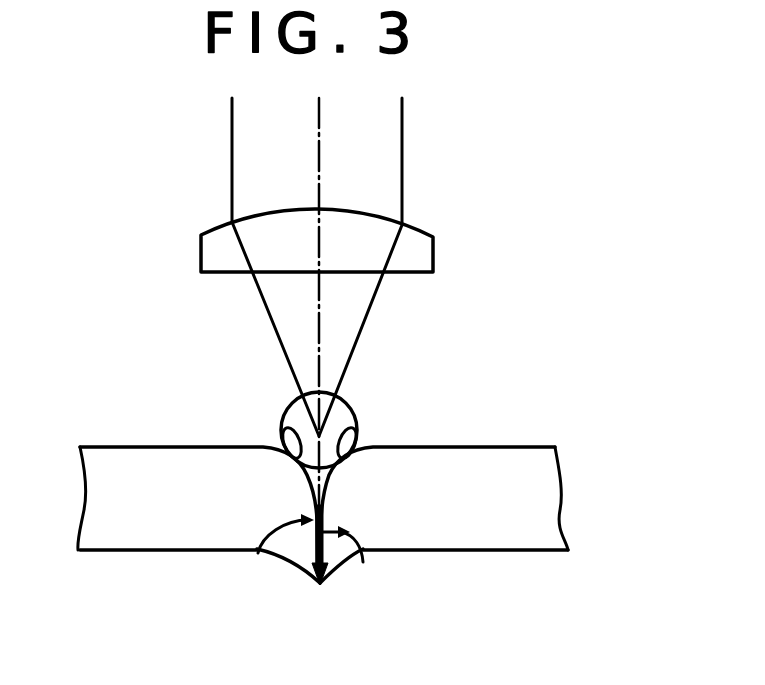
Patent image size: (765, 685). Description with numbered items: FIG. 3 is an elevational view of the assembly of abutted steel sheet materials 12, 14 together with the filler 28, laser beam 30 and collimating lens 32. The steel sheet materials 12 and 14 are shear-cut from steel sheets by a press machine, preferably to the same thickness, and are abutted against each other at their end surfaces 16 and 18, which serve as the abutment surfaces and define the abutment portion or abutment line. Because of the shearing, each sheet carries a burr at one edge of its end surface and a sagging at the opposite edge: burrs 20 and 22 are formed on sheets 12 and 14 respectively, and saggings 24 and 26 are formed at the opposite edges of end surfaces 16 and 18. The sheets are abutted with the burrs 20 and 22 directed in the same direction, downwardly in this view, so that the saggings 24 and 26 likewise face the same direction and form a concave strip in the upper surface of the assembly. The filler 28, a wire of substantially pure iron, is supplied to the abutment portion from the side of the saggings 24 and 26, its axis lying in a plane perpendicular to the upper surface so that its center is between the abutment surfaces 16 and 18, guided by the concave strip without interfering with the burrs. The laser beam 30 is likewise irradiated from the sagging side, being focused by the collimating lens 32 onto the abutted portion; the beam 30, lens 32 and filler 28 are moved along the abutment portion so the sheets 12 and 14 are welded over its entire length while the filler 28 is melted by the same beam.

The steel sheet material 12 is at (128, 460).
The steel sheet material 14 is at (512, 472).
The end surface 16 is at (364, 556).
The end surface 18 is at (276, 550).
The burr 20 is at (305, 568).
The burr 22 is at (330, 565).
The sagging 24 is at (290, 428).
The sagging 26 is at (358, 430).
The filler 28 is at (352, 406).
The laser beam 30 is at (402, 150).
The collimating lens 32 is at (422, 237).